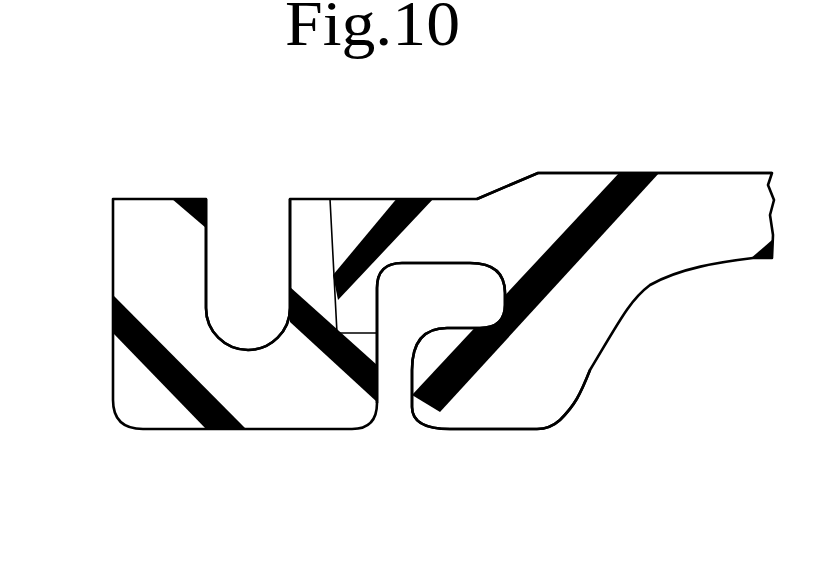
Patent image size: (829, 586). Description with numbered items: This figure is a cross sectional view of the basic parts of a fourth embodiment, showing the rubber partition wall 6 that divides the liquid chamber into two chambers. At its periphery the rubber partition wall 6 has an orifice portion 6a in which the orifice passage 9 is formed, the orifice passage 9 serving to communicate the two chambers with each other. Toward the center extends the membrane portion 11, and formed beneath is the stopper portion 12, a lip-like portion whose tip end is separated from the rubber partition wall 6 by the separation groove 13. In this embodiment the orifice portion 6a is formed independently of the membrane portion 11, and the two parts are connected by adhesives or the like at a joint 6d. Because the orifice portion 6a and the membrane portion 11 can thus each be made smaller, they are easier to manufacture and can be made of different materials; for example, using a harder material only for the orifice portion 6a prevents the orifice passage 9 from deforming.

The rubber partition wall 6 is at (721, 154).
The orifice portion 6a is at (133, 287).
The joint 6d is at (327, 240).
The orifice passage 9 is at (243, 255).
The membrane portion 11 is at (672, 195).
The stopper portion 12 is at (512, 403).
The separation groove 13 is at (483, 292).